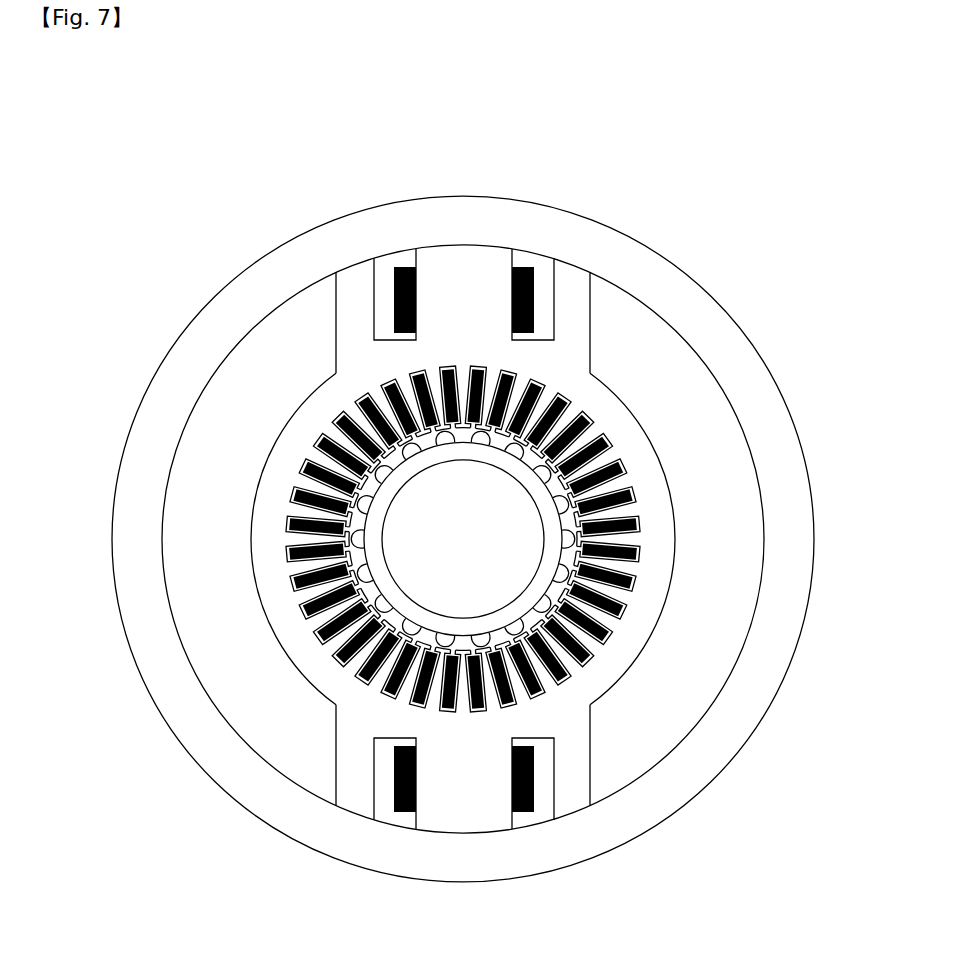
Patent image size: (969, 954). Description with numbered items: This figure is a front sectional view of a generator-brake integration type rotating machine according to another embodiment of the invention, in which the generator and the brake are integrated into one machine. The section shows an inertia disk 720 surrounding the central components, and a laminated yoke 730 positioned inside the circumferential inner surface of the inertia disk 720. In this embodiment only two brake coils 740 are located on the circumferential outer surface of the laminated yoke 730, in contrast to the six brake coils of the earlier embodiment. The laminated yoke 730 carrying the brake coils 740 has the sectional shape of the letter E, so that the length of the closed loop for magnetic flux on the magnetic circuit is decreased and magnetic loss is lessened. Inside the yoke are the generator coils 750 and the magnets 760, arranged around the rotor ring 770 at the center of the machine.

The inertia disk 720 is at (275, 277).
The laminated yoke 730 is at (275, 502).
The brake coils 740 is at (409, 270).
The generator coils 750 is at (300, 577).
The magnets 760 is at (610, 436).
The rotor ring 770 is at (553, 543).